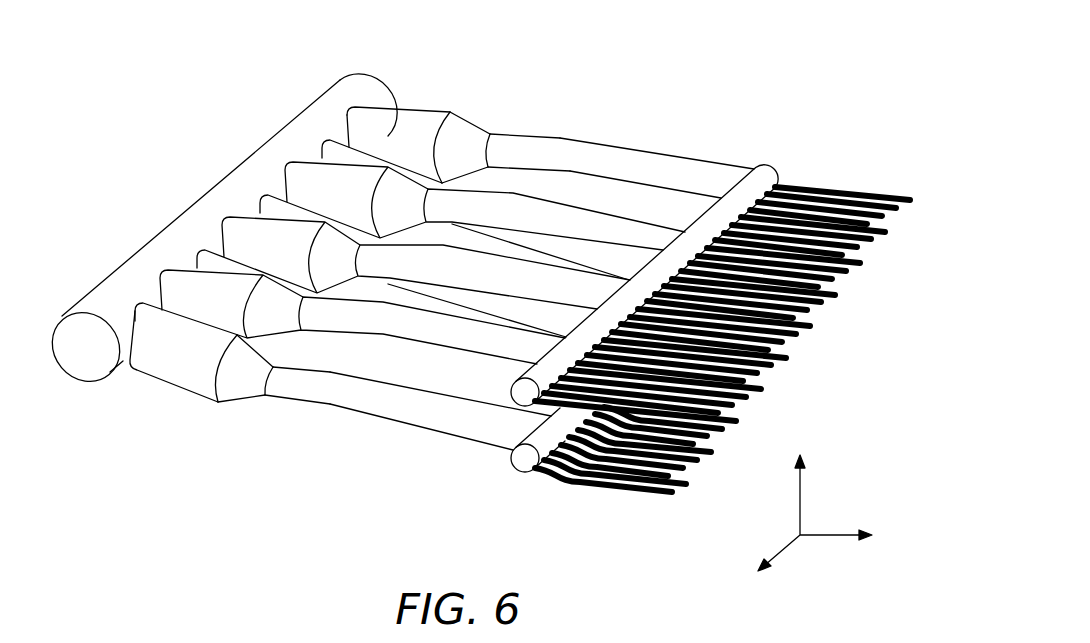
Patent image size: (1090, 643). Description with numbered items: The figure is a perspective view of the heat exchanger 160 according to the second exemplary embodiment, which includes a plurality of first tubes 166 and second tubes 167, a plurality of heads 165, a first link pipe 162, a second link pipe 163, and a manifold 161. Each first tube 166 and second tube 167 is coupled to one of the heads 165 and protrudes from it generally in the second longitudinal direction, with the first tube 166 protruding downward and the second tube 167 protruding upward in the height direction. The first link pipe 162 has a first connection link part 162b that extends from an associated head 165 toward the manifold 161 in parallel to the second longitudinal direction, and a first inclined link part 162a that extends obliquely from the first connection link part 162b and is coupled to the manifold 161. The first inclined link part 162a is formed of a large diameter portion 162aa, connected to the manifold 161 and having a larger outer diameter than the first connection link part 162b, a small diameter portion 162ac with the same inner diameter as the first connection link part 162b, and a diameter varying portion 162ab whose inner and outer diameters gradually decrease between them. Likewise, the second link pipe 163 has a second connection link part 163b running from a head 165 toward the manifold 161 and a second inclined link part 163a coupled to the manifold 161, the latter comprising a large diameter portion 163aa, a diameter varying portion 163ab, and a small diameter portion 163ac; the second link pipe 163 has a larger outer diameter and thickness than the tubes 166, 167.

The heat exchanger 160 is at (601, 116).
The manifold 161 is at (135, 272).
The first link pipe 162 is at (375, 441).
The first inclined link part 162a is at (281, 410).
The large diameter portion 162aa is at (157, 357).
The diameter varying portion 162ab is at (230, 385).
The small diameter portion 162ac is at (313, 405).
The first connection link part 162b is at (450, 430).
The second link pipe 163 is at (625, 145).
The second inclined link part 163a is at (517, 131).
The large diameter portion 163aa is at (400, 120).
The diameter varying portion 163ab is at (464, 130).
The small diameter portion 163ac is at (557, 140).
The second connection link part 163b is at (672, 175).
The heads 165 is at (740, 200).
The first tube 166 is at (605, 480).
The second tube 167 is at (645, 452).